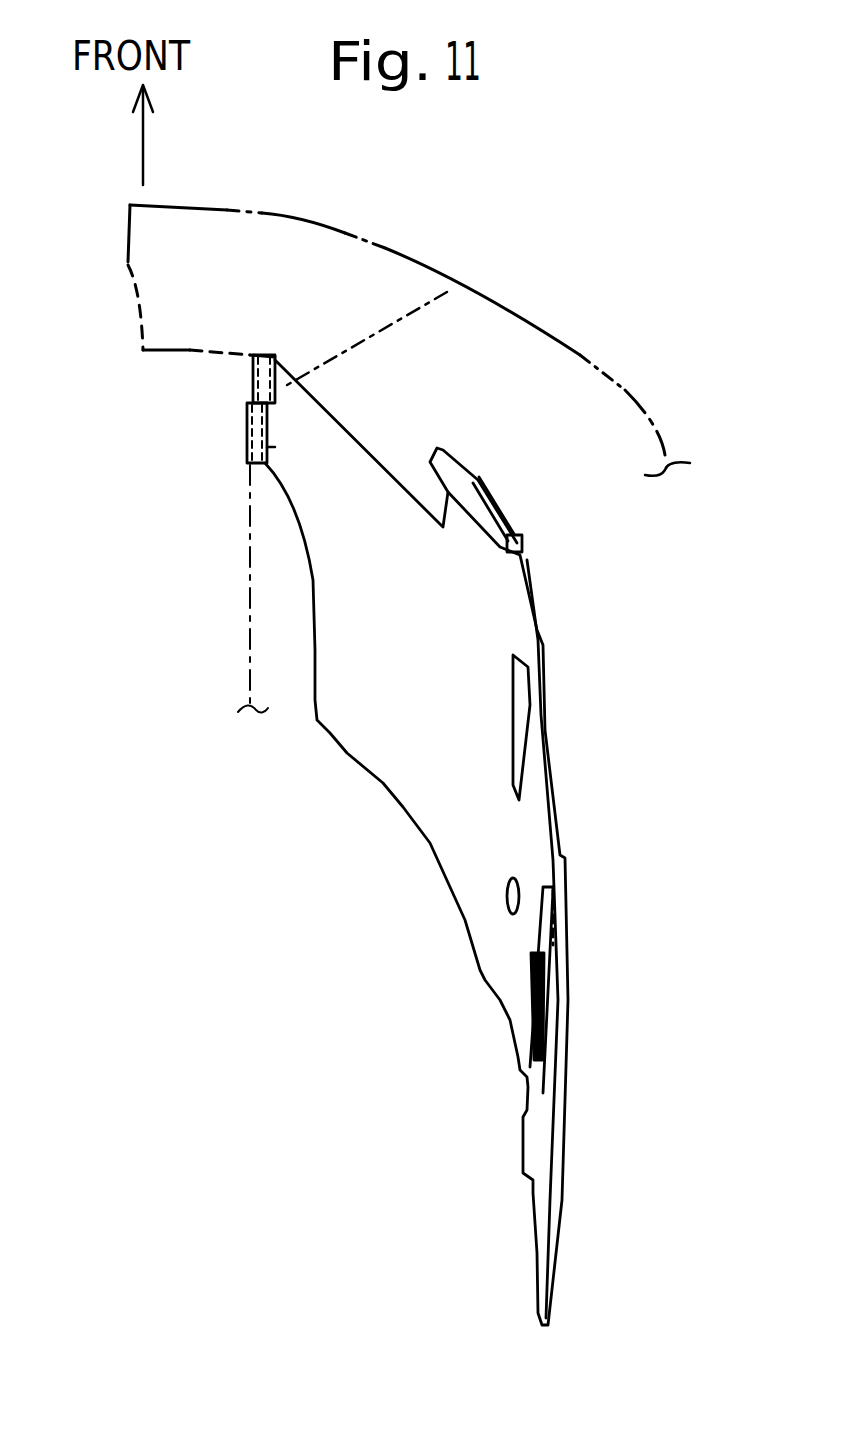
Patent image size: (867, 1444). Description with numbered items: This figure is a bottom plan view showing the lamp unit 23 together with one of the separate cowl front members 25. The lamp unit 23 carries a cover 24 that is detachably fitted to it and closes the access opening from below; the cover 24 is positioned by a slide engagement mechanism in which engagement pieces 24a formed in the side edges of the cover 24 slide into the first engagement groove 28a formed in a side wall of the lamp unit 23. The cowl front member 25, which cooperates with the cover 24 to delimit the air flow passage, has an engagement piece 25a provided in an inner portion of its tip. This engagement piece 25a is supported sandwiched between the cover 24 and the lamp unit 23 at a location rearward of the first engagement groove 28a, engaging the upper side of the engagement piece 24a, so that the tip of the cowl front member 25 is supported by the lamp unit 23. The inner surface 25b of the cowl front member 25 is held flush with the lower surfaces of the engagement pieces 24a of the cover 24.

The lamp unit 23 is at (625, 390).
The cover 24 is at (170, 350).
The engagement piece 24a is at (270, 447).
The cowl front member 25 is at (412, 840).
The engagement piece 25a is at (247, 437).
The inner surface 25b is at (412, 752).
The engagement groove 28a is at (447, 292).